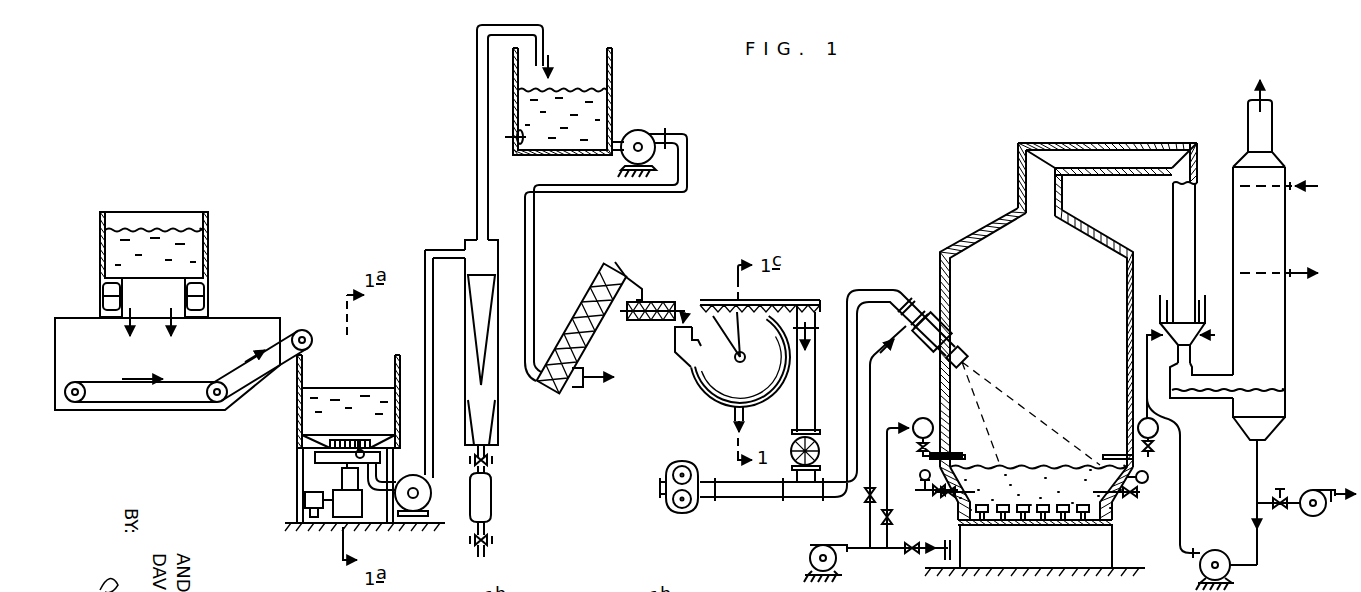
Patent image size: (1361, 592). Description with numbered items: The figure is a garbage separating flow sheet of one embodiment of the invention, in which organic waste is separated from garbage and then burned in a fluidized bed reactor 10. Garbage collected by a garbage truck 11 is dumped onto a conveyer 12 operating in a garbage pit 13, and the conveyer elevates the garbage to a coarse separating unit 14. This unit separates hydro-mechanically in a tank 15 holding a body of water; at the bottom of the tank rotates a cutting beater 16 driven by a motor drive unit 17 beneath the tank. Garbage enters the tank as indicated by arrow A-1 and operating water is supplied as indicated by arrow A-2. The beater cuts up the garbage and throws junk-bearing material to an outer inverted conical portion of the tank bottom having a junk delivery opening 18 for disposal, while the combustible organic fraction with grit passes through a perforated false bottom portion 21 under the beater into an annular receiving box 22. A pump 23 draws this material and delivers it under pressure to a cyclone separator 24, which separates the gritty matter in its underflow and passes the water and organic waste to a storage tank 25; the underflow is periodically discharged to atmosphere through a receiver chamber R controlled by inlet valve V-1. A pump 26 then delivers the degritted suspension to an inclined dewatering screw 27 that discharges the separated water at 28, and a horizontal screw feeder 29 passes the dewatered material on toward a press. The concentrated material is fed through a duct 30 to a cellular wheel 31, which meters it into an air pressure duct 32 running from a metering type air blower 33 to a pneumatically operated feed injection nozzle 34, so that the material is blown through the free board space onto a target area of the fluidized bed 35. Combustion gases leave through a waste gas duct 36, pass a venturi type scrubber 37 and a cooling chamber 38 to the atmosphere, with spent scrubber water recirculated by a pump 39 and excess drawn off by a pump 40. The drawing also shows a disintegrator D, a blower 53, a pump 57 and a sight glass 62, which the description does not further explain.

The fluidized bed reactor 10 is at (969, 219).
The garbage truck 11 is at (202, 250).
The conveyer 12 is at (172, 395).
The garbage pit 13 is at (108, 364).
The coarse separating unit 14 is at (288, 441).
The tank 15 is at (360, 382).
The cutting beater 16 is at (332, 440).
The motor drive unit 17 is at (293, 522).
The junk delivery opening 18 is at (296, 467).
The perforated false bottom portion 21 is at (360, 440).
The annular receiving box 22 is at (327, 460).
The pump 23 is at (410, 507).
The cyclone separator 24 is at (467, 352).
The storage tank 25 is at (586, 84).
The pump 26 is at (641, 134).
The inclined dewatering screw 27 is at (578, 315).
The water discharge 28 is at (575, 390).
The horizontal screw feeder 29 is at (656, 304).
The duct 30 is at (806, 384).
The cellular wheel 31 is at (795, 448).
The air pressure duct 32 is at (803, 497).
The metering type air blower 33 is at (691, 471).
The feed injection nozzle 34 is at (922, 343).
The target area of the fluidized bed 35 is at (1084, 479).
The waste gas duct 36 is at (1035, 185).
The venturi type scrubber 37 is at (1190, 352).
The cooling chamber 38 is at (1270, 228).
The pump 39 is at (1211, 556).
The pump 40 is at (1316, 516).
The gas blower 53 is at (816, 546).
The pump 57 is at (919, 418).
The sight glass 62 is at (920, 483).
The garbage feed arrow A-1 is at (332, 352).
The operating water supply arrow A-2 is at (375, 368).
The disintegrator D is at (705, 406).
The receiver chamber R is at (492, 497).
The inlet valve V-1 is at (490, 461).